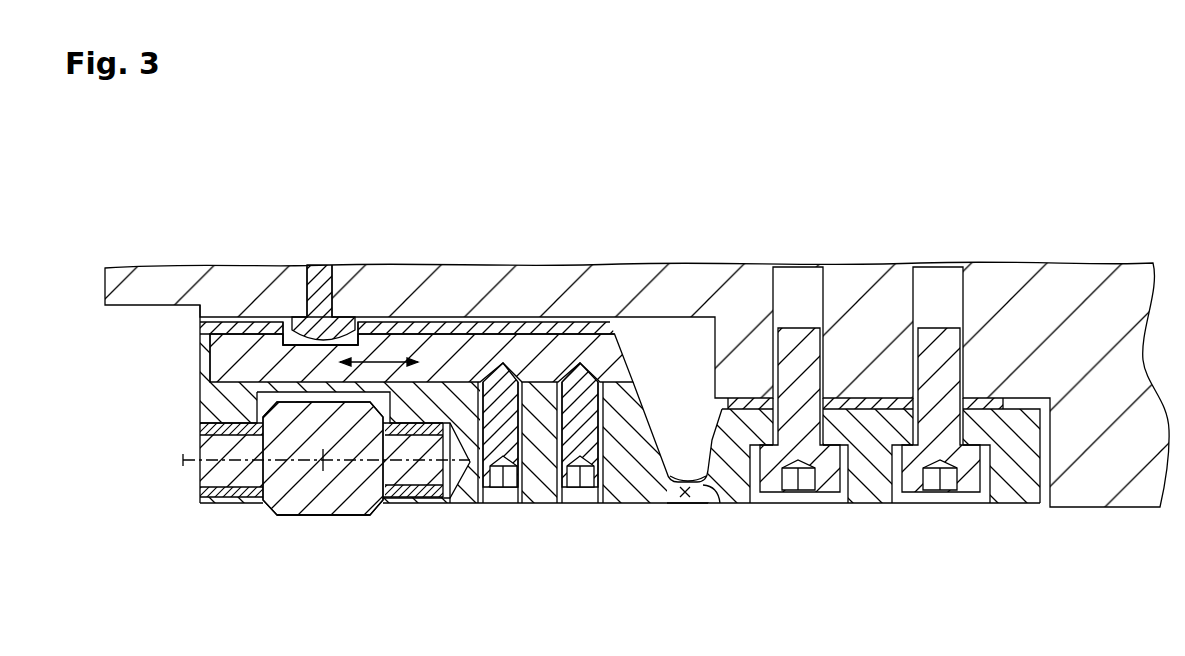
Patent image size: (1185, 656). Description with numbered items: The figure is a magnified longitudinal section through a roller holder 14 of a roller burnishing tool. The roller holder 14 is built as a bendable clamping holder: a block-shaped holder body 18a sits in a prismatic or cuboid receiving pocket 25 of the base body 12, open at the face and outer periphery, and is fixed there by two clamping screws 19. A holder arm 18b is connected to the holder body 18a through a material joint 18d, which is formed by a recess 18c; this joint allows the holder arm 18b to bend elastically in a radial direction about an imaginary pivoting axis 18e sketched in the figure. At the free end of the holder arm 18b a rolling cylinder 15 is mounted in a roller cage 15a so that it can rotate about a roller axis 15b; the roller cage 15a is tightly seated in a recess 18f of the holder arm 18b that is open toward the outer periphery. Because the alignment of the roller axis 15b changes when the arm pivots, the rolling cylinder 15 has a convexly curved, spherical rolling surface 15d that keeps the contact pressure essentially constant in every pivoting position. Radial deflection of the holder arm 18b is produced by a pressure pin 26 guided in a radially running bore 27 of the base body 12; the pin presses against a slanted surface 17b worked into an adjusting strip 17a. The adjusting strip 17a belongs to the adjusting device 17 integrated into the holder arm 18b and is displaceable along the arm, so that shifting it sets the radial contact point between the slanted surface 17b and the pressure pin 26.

The base body 12 is at (1114, 478).
The roller holder 14 is at (690, 505).
The rolling cylinder 15 is at (277, 499).
The roller cage 15a is at (415, 500).
The roller axis 15b is at (183, 462).
The rolling surface 15d is at (350, 517).
The adjusting device 17 is at (368, 304).
The adjusting strip 17a is at (235, 368).
The slanted surface 17b is at (340, 364).
The holder body 18a is at (850, 487).
The holder arm 18b is at (622, 486).
The recess 18c is at (685, 456).
The material joint 18d is at (685, 497).
The imaginary pivoting axis 18e is at (715, 502).
The recess 18f is at (405, 398).
The clamping screws 19 is at (826, 482).
The receiving pocket 25 is at (645, 352).
The pressure pin 26 is at (323, 282).
The bore 27 is at (333, 292).